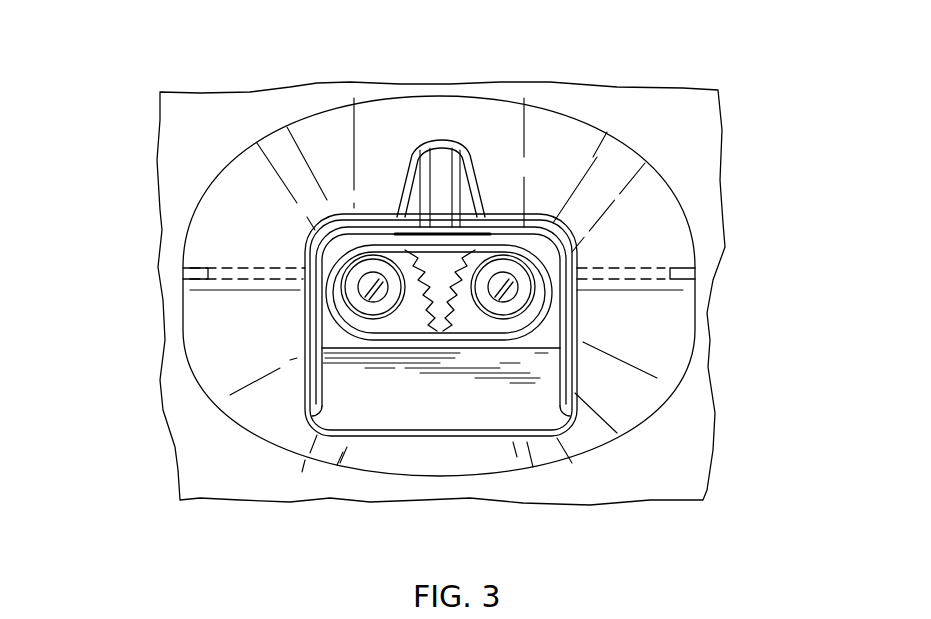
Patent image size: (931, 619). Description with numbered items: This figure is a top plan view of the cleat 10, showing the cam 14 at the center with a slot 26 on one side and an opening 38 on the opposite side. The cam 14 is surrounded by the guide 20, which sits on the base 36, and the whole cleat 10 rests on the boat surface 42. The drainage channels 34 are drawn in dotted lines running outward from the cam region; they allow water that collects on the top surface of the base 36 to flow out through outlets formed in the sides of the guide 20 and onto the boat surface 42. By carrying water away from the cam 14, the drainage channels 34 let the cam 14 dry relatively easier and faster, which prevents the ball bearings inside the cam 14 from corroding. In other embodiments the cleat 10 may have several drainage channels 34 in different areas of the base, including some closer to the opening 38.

The cleat 10 is at (233, 123).
The cam 14 is at (412, 312).
The guide 20 is at (650, 330).
The slot 26 is at (405, 214).
The drainage channels 34 is at (258, 272).
The base 36 is at (557, 398).
The opening 38 is at (457, 403).
The boat surface 42 is at (690, 487).